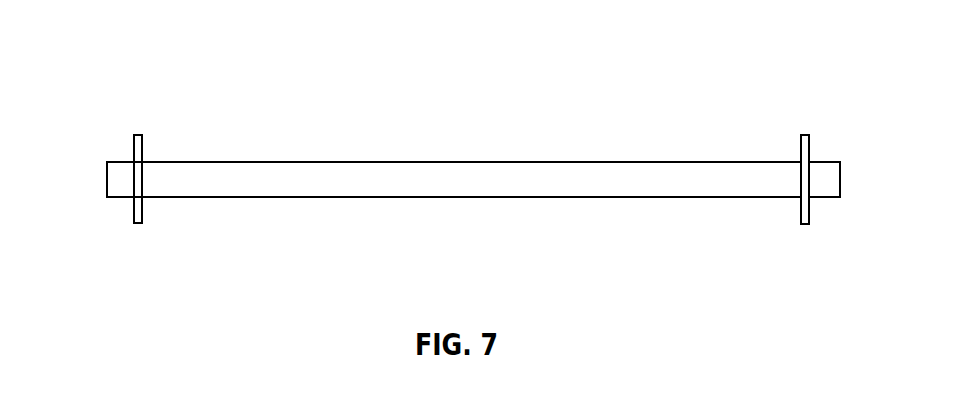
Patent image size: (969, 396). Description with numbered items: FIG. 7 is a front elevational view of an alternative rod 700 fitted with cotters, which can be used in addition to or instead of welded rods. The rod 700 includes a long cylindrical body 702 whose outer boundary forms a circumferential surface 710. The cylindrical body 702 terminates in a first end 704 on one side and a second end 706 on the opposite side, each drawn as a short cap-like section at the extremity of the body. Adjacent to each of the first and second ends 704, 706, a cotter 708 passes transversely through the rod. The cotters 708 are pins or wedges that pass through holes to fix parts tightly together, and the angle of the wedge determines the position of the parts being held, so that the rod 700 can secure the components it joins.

The alternative rod 700 is at (256, 63).
The cylindrical body 702 is at (564, 170).
The first end 704 is at (107, 180).
The second end 706 is at (840, 179).
The cotter 708 is at (138, 223).
The circumferential surface 710 is at (666, 197).